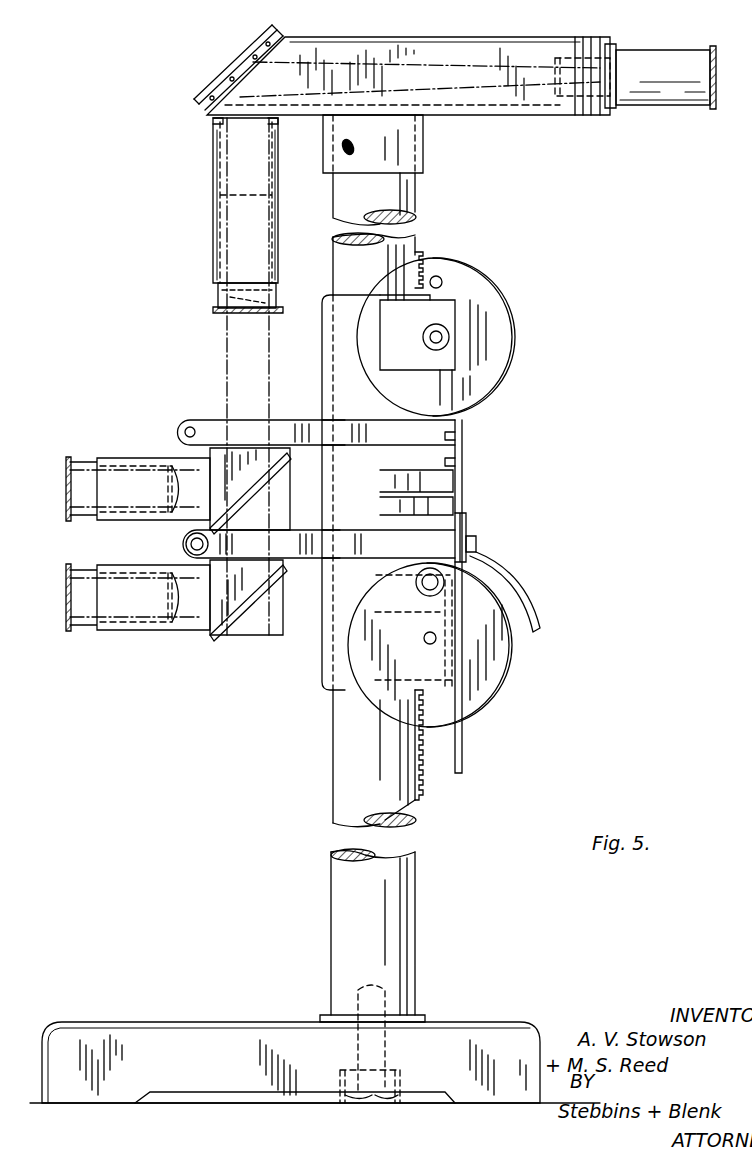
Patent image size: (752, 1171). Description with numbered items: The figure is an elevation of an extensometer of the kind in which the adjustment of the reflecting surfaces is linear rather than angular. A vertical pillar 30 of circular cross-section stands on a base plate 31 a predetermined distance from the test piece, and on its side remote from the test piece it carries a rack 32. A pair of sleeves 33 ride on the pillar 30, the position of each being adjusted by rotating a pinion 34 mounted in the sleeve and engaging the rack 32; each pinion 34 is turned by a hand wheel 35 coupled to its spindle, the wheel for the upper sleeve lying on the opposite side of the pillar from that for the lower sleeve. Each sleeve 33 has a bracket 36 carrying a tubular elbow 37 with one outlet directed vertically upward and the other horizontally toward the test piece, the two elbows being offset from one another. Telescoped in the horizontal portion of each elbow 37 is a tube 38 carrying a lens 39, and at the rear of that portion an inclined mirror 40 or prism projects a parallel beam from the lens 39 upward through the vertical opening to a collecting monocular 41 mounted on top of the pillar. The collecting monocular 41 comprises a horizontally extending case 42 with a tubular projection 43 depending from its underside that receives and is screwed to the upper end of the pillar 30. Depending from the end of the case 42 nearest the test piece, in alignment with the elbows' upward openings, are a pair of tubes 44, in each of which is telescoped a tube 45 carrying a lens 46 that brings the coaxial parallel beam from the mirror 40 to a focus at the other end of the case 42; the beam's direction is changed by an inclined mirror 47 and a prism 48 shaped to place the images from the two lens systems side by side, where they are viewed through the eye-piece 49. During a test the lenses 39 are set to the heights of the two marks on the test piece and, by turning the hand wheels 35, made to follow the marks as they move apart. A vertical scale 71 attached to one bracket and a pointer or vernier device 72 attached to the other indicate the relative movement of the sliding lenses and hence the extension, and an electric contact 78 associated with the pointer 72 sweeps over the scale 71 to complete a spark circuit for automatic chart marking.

The vertical pillar 30 is at (420, 195).
The base plate 31 is at (490, 1040).
The rack 32 is at (405, 268).
The sleeve 33 is at (322, 370).
The pinion 34 is at (447, 350).
The hand wheel 35 is at (492, 318).
The bracket 36 is at (257, 423).
The tubular elbow 37 is at (210, 455).
The tube 38 is at (85, 458).
The lens 39 is at (160, 470).
The inclined mirror 40 is at (257, 485).
The collecting monocular 41 is at (447, 37).
The case 42 is at (510, 118).
The tubular projection 43 is at (423, 158).
The tube 44 is at (213, 222).
The tube 45 is at (218, 298).
The lens 46 is at (228, 312).
The inclined mirror 47 is at (232, 74).
The prism 48 is at (568, 90).
The eye-piece 49 is at (667, 83).
The vertical scale 71 is at (462, 483).
The pointer or vernier device 72 is at (466, 520).
The electric contact 78 is at (476, 543).